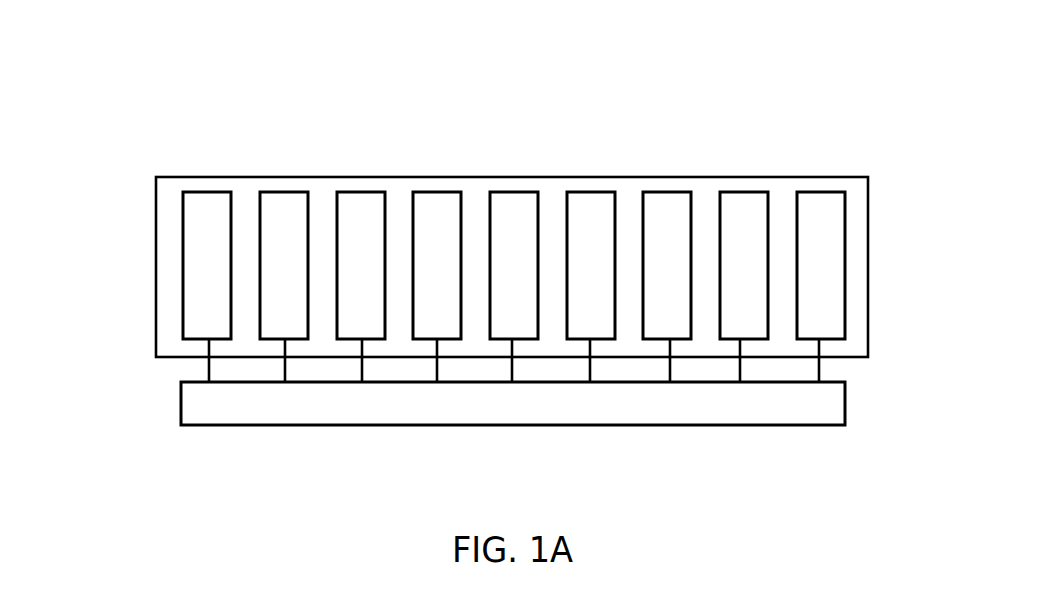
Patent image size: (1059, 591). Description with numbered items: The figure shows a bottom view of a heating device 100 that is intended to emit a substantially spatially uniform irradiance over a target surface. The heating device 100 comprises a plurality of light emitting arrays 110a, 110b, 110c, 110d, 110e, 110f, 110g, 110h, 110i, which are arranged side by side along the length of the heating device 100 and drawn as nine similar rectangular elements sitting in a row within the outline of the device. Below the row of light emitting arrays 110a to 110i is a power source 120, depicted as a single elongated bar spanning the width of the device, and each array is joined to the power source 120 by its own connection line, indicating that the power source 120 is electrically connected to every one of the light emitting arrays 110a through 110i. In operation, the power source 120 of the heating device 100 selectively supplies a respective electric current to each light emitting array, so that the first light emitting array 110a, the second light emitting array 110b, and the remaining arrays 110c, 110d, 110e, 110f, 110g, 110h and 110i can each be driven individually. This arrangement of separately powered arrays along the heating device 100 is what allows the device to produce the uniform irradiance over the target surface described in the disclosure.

The heating device 100 is at (517, 148).
The light emitting array 110a is at (196, 263).
The light emitting array 110b is at (292, 232).
The light emitting array 110c is at (368, 231).
The light emitting array 110d is at (443, 231).
The light emitting array 110e is at (523, 224).
The light emitting array 110f is at (598, 228).
The light emitting array 110g is at (670, 230).
The light emitting array 110h is at (748, 237).
The light emitting array 110i is at (830, 252).
The power source 120 is at (373, 410).